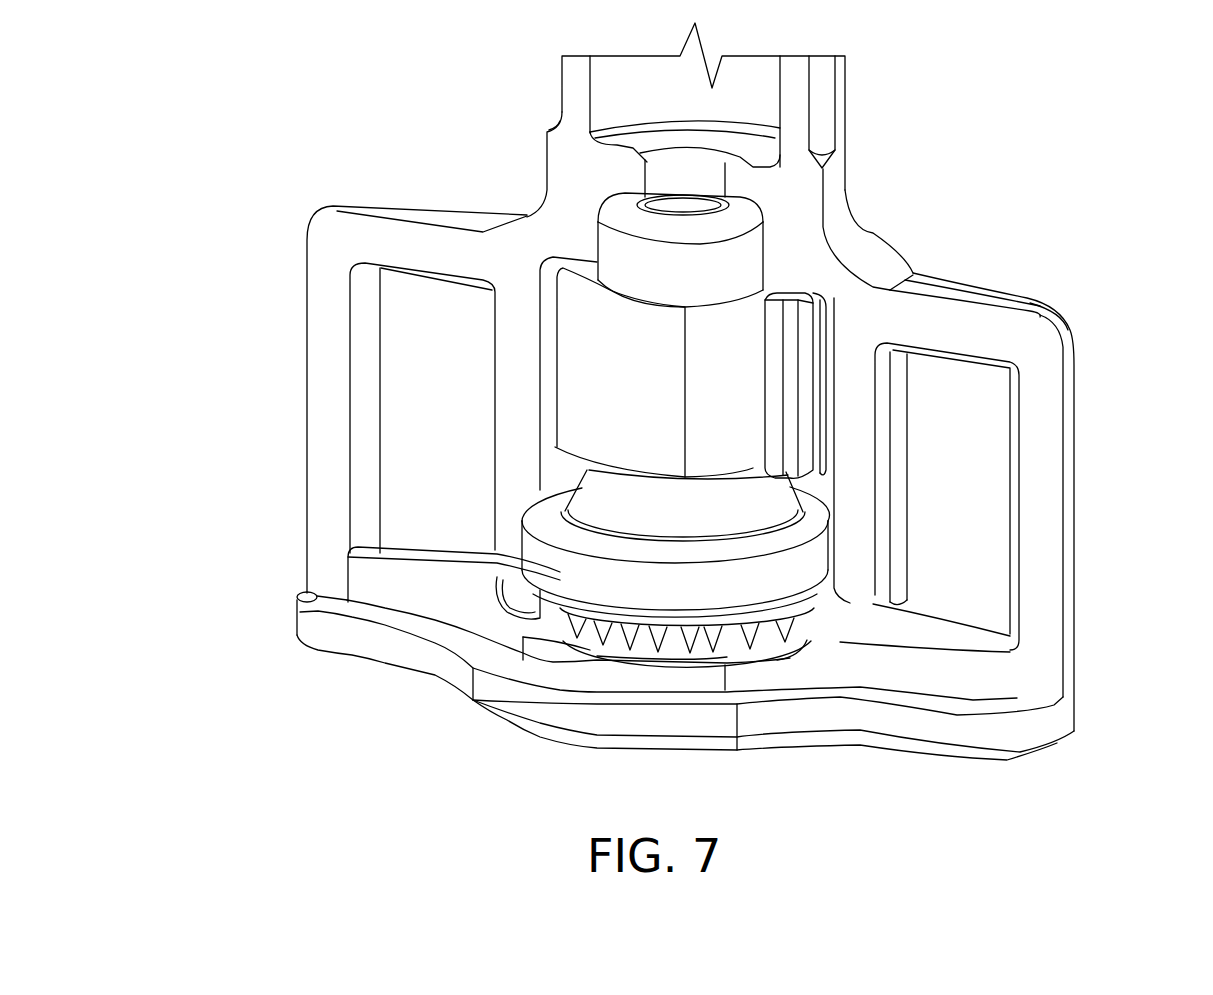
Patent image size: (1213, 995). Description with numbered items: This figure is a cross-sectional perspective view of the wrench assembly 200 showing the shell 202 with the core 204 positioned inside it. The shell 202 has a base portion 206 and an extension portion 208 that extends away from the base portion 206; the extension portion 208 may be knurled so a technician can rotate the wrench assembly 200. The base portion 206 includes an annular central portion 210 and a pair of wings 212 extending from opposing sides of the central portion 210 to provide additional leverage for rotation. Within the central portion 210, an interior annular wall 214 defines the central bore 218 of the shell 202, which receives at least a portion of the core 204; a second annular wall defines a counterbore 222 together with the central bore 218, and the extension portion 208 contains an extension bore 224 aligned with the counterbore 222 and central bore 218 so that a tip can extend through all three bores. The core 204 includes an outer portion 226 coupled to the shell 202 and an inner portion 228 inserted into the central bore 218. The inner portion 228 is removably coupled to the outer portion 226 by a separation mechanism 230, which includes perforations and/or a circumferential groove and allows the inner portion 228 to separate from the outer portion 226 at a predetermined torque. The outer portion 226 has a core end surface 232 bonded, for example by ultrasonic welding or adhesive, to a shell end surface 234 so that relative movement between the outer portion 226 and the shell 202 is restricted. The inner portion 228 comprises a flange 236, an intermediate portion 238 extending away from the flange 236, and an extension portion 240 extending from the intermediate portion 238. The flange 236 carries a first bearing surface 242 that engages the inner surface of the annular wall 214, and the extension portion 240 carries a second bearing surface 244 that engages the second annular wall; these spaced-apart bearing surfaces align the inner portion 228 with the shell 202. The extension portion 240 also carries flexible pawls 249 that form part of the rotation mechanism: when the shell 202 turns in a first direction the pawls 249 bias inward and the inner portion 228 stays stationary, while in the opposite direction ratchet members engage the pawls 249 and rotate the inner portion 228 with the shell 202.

The wrench assembly 200 is at (272, 148).
The shell 202 is at (370, 178).
The core 204 is at (445, 730).
The base portion 206 is at (992, 262).
The extension portion 208 is at (838, 77).
The central portion 210 is at (905, 224).
The wings 212 is at (1060, 320).
The interior annular wall 214 is at (847, 533).
The central bore 218 is at (842, 354).
The counterbore 222 is at (765, 249).
The extension bore 224 is at (692, 102).
The outer portion 226 is at (307, 680).
The inner portion 228 is at (565, 333).
The separation mechanism 230 is at (795, 644).
The core end surface 232 is at (328, 611).
The shell end surface 234 is at (297, 598).
The flange 236 is at (617, 583).
The intermediate portion 238 is at (740, 510).
The extension portion 240 is at (598, 264).
The first bearing surface 242 is at (832, 560).
The second bearing surface 244 is at (770, 274).
The pawl 249 is at (773, 371).